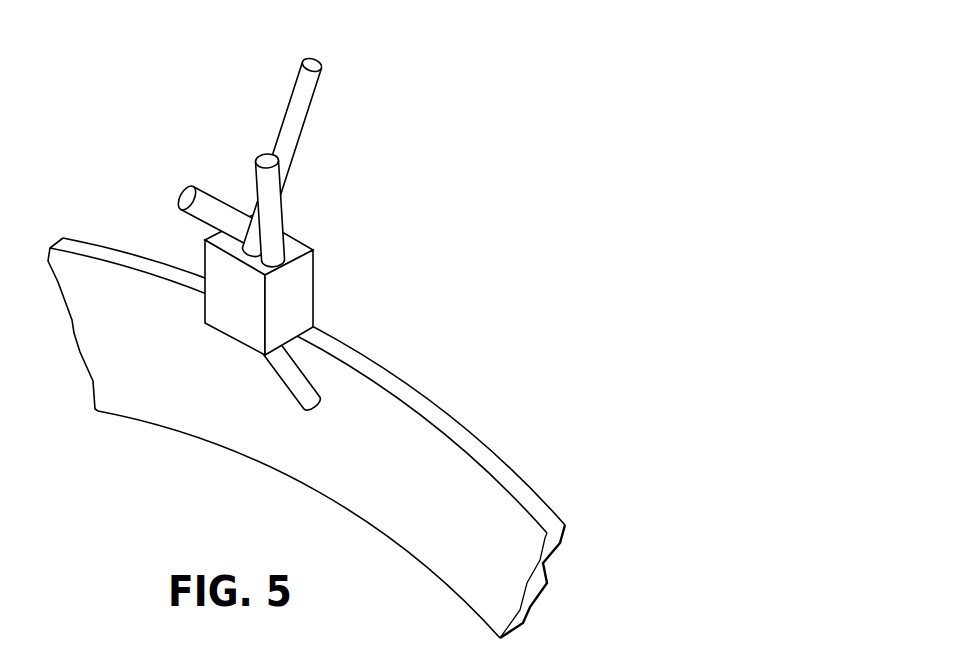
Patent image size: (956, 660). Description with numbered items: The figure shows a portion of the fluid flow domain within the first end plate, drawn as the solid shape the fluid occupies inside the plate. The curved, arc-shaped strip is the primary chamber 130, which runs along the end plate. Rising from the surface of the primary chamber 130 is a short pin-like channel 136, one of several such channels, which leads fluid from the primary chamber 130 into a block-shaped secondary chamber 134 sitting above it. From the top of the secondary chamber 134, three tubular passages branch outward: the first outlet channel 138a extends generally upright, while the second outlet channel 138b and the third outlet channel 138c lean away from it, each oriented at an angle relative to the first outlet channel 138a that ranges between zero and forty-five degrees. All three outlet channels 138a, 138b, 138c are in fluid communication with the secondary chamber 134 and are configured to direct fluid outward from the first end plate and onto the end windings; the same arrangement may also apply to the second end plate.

The primary chamber 130 is at (498, 460).
The secondary chamber 134 is at (317, 297).
The channel 136 is at (276, 383).
The first outlet channel 138a is at (283, 212).
The second outlet channel 138b is at (212, 193).
The third outlet channel 138c is at (287, 107).